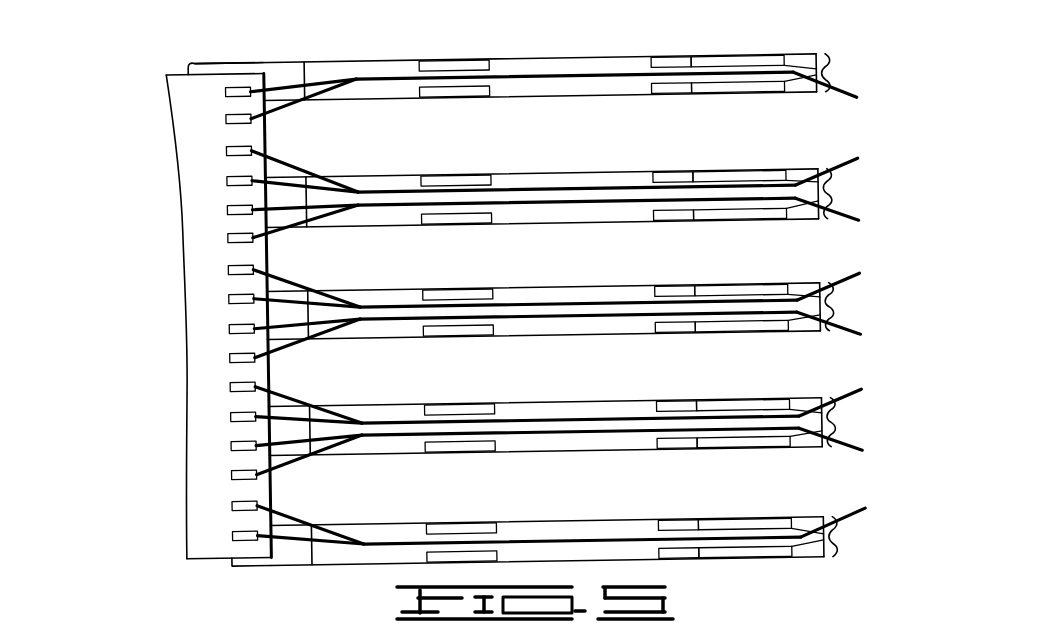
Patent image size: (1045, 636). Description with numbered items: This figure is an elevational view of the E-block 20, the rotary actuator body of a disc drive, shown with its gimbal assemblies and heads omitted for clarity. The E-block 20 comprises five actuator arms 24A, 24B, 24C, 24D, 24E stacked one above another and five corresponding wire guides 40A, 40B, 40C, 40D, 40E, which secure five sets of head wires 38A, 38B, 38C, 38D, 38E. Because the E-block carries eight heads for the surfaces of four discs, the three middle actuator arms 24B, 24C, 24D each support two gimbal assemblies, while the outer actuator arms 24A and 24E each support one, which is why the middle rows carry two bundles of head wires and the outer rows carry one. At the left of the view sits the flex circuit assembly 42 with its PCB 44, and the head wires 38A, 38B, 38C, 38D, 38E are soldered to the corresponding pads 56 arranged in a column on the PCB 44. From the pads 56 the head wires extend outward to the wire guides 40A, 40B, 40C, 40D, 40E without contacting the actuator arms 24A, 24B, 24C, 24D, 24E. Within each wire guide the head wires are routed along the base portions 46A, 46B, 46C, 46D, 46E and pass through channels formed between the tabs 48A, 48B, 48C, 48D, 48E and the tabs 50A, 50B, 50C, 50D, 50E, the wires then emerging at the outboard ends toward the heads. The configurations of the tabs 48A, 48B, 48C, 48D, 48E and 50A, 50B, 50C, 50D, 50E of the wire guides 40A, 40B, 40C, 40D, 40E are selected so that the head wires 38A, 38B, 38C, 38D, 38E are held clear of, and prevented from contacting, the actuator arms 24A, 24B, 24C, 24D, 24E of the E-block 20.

The E-block 20 is at (139, 133).
The flex circuit assembly 42 is at (136, 65).
The PCB 44 is at (214, 547).
The pads 56 is at (205, 116).
The actuator arm 24A is at (289, 73).
The actuator arm 24B is at (302, 183).
The actuator arm 24C is at (298, 292).
The actuator arm 24D is at (303, 412).
The actuator arm 24E is at (298, 533).
The tab 50A is at (441, 70).
The tab 50B is at (437, 187).
The tab 50C is at (437, 301).
The tab 50D is at (436, 414).
The tab 50E is at (436, 532).
The base portion 46A is at (560, 72).
The base portion 46B is at (558, 189).
The base portion 46C is at (556, 302).
The base portion 46D is at (554, 416).
The base portion 46E is at (552, 534).
The wire guide 40A is at (641, 57).
The wire guide 40B is at (639, 173).
The wire guide 40C is at (637, 287).
The wire guide 40D is at (642, 407).
The wire guide 40E is at (637, 525).
The tab 48A is at (754, 92).
The tab 48B is at (752, 212).
The tab 48C is at (750, 325).
The tab 48D is at (745, 452).
The tab 48E is at (743, 567).
The head wires 38A is at (844, 92).
The head wires 38B is at (840, 175).
The head wires 38C is at (840, 289).
The head wires 38D is at (840, 404).
The head wires 38E is at (850, 529).